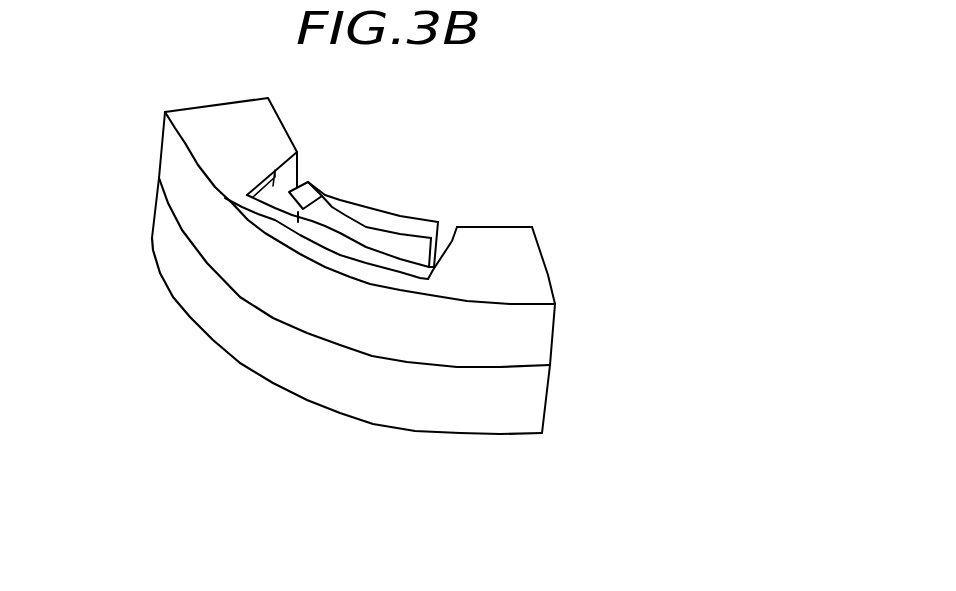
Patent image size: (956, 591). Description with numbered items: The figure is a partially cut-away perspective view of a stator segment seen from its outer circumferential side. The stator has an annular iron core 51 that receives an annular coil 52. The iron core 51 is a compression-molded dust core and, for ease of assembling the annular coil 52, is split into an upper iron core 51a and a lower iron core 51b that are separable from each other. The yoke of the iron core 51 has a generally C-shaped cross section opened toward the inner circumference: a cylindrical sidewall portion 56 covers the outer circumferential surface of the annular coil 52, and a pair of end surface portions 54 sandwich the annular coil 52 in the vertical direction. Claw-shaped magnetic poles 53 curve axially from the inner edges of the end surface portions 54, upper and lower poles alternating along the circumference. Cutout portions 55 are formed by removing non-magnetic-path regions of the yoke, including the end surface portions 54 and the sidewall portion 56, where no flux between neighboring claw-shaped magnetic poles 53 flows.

The iron core 51 is at (447, 266).
The upper iron core 51a is at (555, 333).
The lower iron core 51b is at (549, 400).
The annular coil 52 is at (312, 182).
The claw-shaped magnetic poles 53 is at (415, 228).
The end surface portion 54 is at (507, 280).
The cutout portions 55 is at (350, 238).
The sidewall portion 56 is at (317, 313).